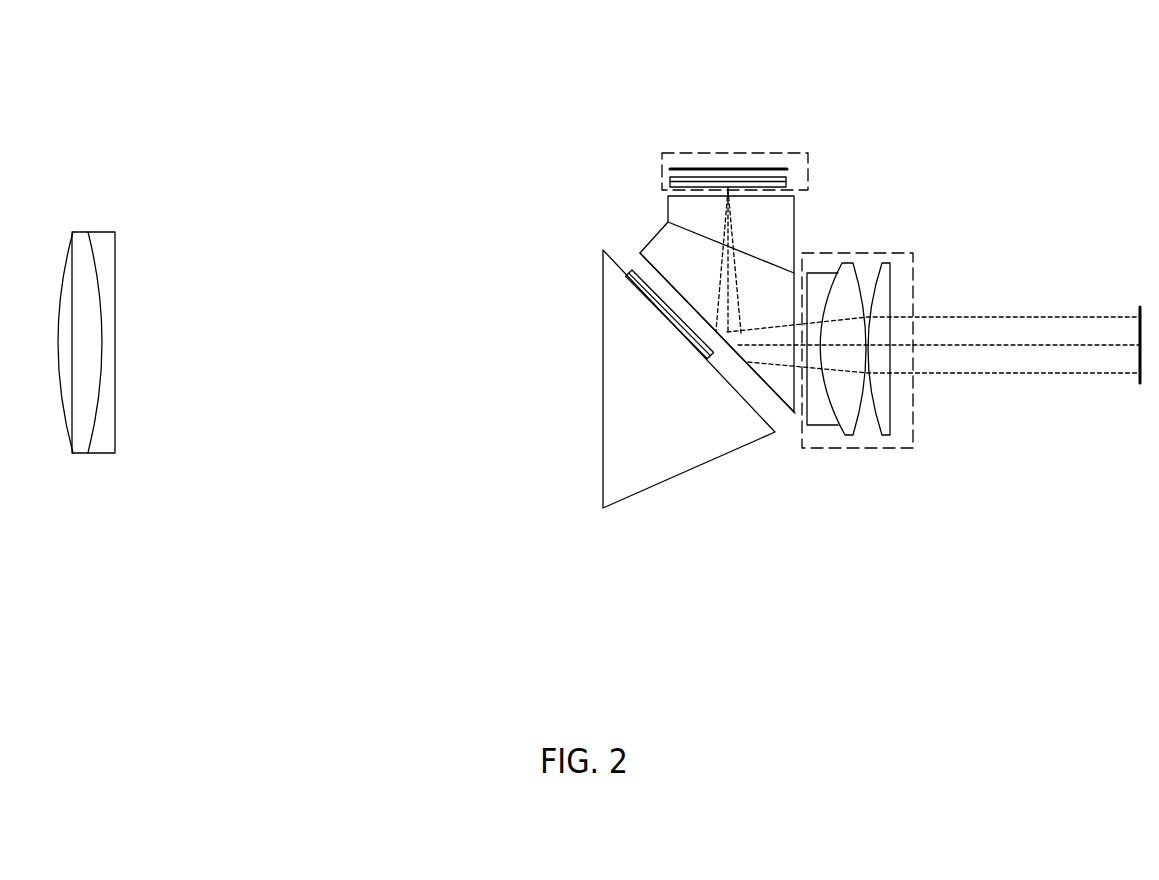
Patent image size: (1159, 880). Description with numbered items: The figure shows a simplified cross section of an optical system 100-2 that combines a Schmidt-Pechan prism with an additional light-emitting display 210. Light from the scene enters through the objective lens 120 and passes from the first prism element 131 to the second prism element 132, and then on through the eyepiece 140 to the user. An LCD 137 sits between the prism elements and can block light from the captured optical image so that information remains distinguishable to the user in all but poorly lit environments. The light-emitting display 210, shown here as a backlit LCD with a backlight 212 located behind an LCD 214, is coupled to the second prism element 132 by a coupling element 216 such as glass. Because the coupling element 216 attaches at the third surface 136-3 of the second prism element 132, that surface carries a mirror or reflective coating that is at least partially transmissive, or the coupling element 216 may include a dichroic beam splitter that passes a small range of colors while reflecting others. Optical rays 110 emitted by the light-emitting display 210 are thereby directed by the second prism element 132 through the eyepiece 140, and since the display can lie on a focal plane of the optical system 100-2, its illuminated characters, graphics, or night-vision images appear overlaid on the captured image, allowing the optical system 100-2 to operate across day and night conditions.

The optical system 100-2 is at (971, 115).
The optical rays 110 is at (1012, 318).
The objective lens 120 is at (88, 232).
The first prism element 131 is at (602, 262).
The second prism element 132 is at (785, 403).
The third surface 136-3 is at (700, 237).
The LCD 137 is at (633, 265).
The eyepiece 140 is at (865, 253).
The light-emitting display 210 is at (703, 152).
The backlight 212 is at (778, 169).
The LCD 214 is at (790, 180).
The coupling element 216 is at (794, 222).